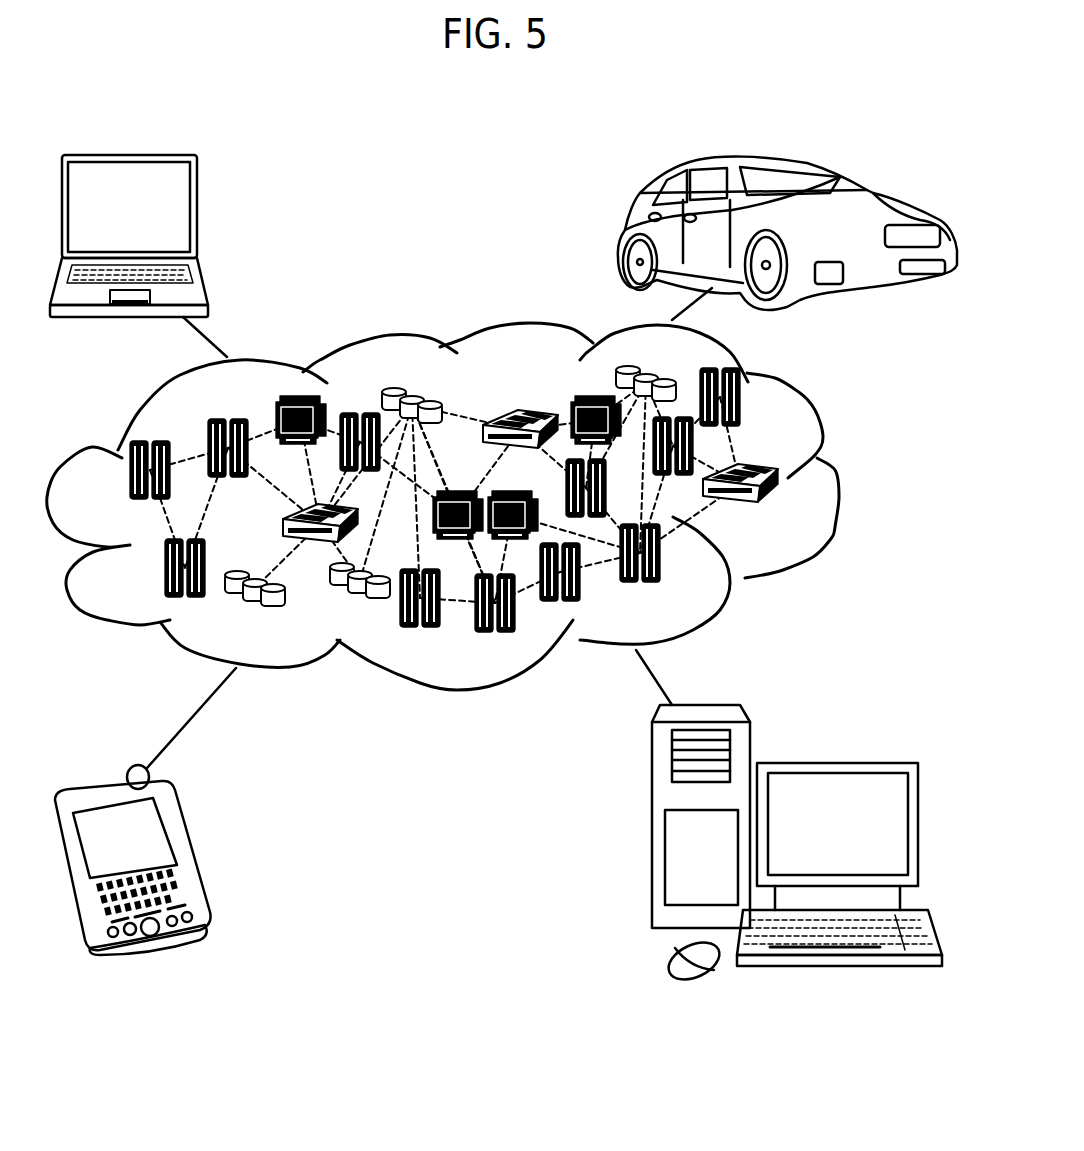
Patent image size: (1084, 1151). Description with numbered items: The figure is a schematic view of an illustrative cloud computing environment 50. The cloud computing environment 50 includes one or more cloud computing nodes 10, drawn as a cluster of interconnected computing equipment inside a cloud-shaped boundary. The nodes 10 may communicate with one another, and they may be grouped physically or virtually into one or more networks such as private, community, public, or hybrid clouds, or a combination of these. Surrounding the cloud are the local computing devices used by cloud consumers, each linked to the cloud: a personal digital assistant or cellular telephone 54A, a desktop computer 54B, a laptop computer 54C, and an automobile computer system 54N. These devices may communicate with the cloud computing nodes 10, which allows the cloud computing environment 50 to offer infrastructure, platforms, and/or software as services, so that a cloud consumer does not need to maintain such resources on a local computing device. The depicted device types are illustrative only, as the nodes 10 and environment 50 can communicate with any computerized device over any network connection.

The cloud computing environment 50 is at (838, 483).
The cloud computing nodes 10 is at (504, 499).
The personal digital assistant or cellular telephone 54A is at (187, 852).
The desktop computer 54B is at (835, 762).
The laptop computer 54C is at (197, 214).
The automobile computer system 54N is at (628, 233).